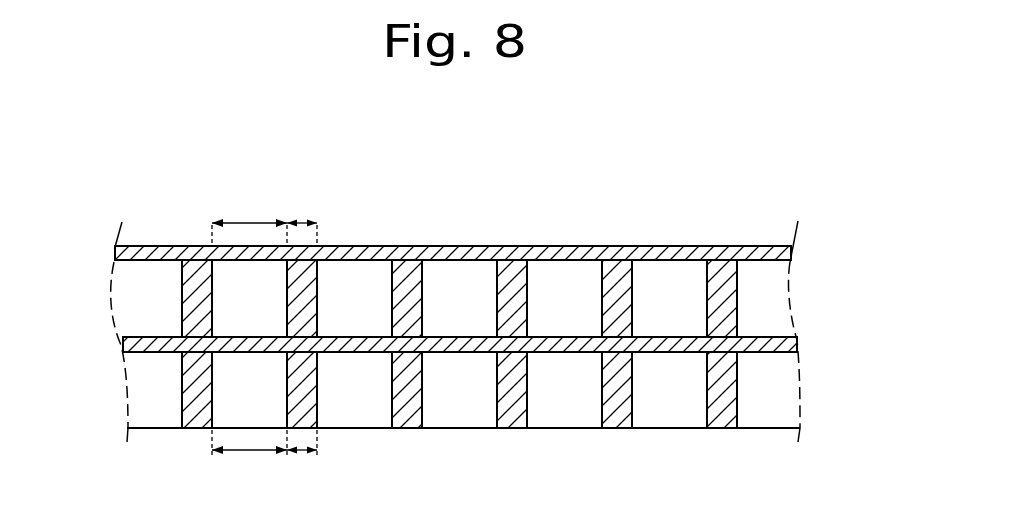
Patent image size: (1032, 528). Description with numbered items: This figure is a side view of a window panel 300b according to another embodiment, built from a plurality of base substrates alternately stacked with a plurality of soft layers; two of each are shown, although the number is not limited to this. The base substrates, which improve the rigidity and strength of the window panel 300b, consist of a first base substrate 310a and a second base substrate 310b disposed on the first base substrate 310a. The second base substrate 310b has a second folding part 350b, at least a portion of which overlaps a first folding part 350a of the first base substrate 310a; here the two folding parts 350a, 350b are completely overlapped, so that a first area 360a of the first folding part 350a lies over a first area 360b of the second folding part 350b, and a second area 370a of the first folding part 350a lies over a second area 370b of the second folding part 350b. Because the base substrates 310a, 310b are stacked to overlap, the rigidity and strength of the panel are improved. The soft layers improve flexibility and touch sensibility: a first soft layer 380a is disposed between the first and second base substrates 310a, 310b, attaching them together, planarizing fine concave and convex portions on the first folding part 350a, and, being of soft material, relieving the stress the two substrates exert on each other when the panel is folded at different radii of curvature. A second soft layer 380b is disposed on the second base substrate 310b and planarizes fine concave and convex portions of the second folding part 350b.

The window panel 300b is at (690, 159).
The first folding part 350a is at (742, 238).
The second folding part 350b is at (800, 343).
The second base substrate 310b is at (768, 295).
The first base substrate 310a is at (768, 390).
The second soft layer 380b is at (118, 252).
The first soft layer 380a is at (124, 345).
The first area of the second folding part 360b is at (249, 220).
The second area of the second folding part 370b is at (302, 224).
The first area of the first folding part 360a is at (249, 455).
The second area of the first folding part 370a is at (303, 452).